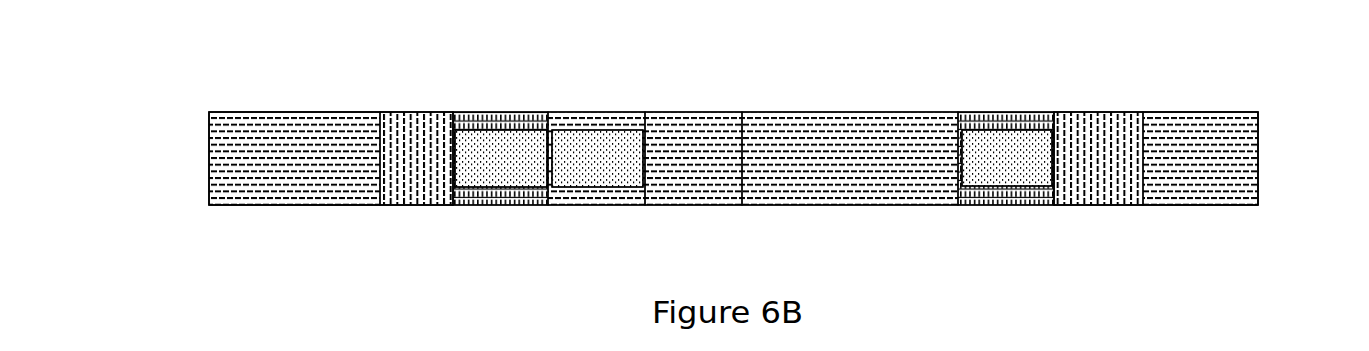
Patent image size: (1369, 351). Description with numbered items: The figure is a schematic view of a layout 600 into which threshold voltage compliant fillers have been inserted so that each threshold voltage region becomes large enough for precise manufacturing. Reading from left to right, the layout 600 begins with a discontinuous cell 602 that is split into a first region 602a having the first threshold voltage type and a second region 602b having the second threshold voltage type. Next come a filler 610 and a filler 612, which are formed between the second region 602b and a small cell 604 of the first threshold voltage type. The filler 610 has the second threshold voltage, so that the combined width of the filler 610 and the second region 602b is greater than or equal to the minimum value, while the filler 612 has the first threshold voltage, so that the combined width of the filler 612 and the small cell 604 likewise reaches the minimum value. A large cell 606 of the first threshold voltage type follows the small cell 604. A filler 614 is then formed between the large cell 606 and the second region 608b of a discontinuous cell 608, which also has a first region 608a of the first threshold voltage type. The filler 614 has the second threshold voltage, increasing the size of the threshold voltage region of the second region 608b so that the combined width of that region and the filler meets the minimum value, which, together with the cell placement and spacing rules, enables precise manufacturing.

The layout 600 is at (1283, 45).
The discontinuous cell 602 is at (341, 230).
The first region 602a is at (284, 112).
The second region 602b is at (408, 112).
The small cell 604 is at (688, 112).
The large cell 606 is at (828, 112).
The discontinuous cell 608 is at (1151, 228).
The first region 608a is at (1193, 112).
The second region 608b is at (1093, 112).
The filler 610 is at (497, 112).
The filler 612 is at (593, 112).
The filler 614 is at (1003, 112).